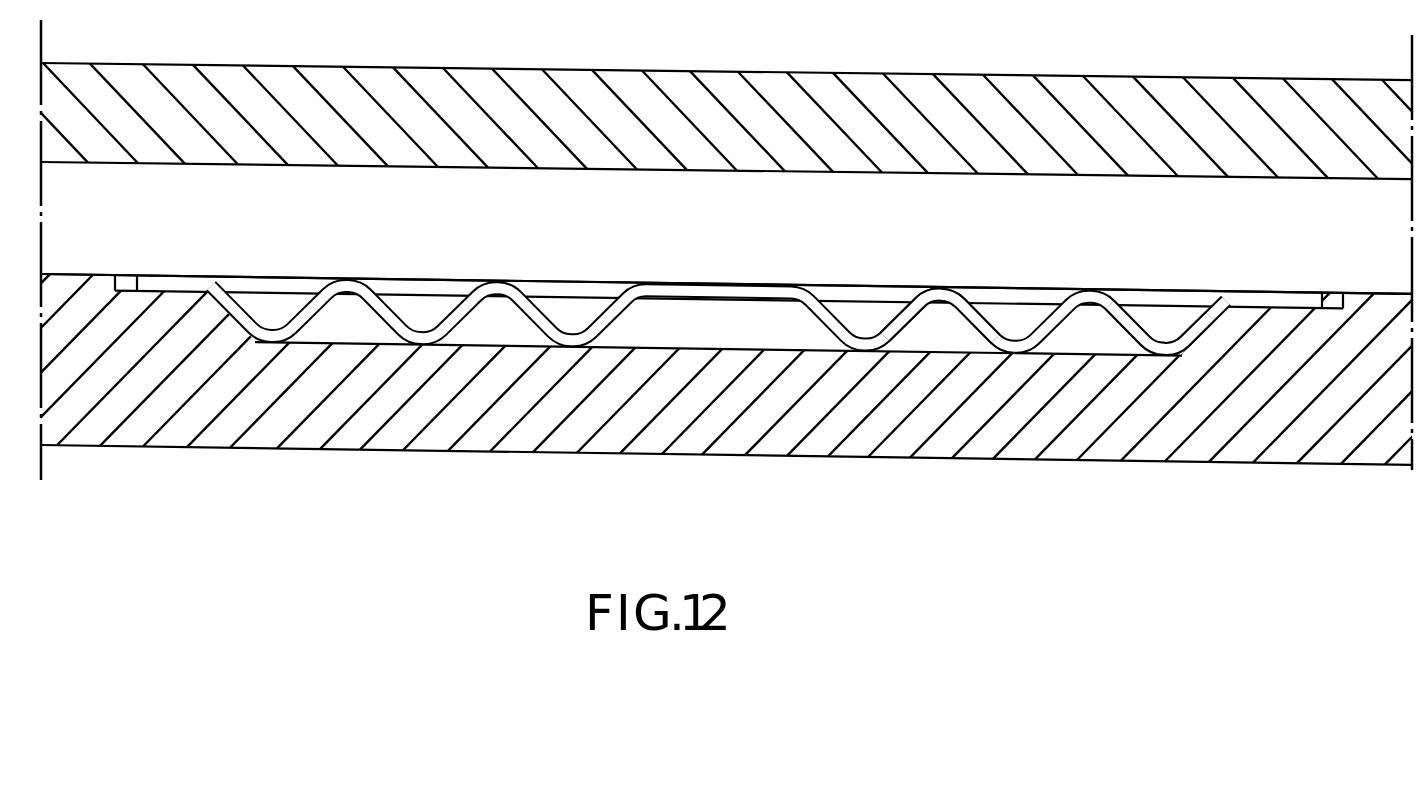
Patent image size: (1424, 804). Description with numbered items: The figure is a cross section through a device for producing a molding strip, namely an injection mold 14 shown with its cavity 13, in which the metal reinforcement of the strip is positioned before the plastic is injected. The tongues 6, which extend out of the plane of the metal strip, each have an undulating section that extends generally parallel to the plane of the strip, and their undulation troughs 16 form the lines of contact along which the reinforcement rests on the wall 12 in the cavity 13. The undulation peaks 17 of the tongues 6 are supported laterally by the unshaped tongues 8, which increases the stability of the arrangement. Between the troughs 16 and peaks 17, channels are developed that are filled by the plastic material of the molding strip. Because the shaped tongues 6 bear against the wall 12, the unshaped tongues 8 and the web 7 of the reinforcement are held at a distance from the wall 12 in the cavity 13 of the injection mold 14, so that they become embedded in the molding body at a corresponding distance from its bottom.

The tongue 6 is at (968, 329).
The web 7 is at (728, 281).
The tongue 8 is at (1026, 287).
The wall 12 is at (659, 342).
The cavity 13 is at (472, 238).
The injection mold 14 is at (240, 471).
The trough 16 is at (1163, 358).
The peak 17 is at (940, 287).